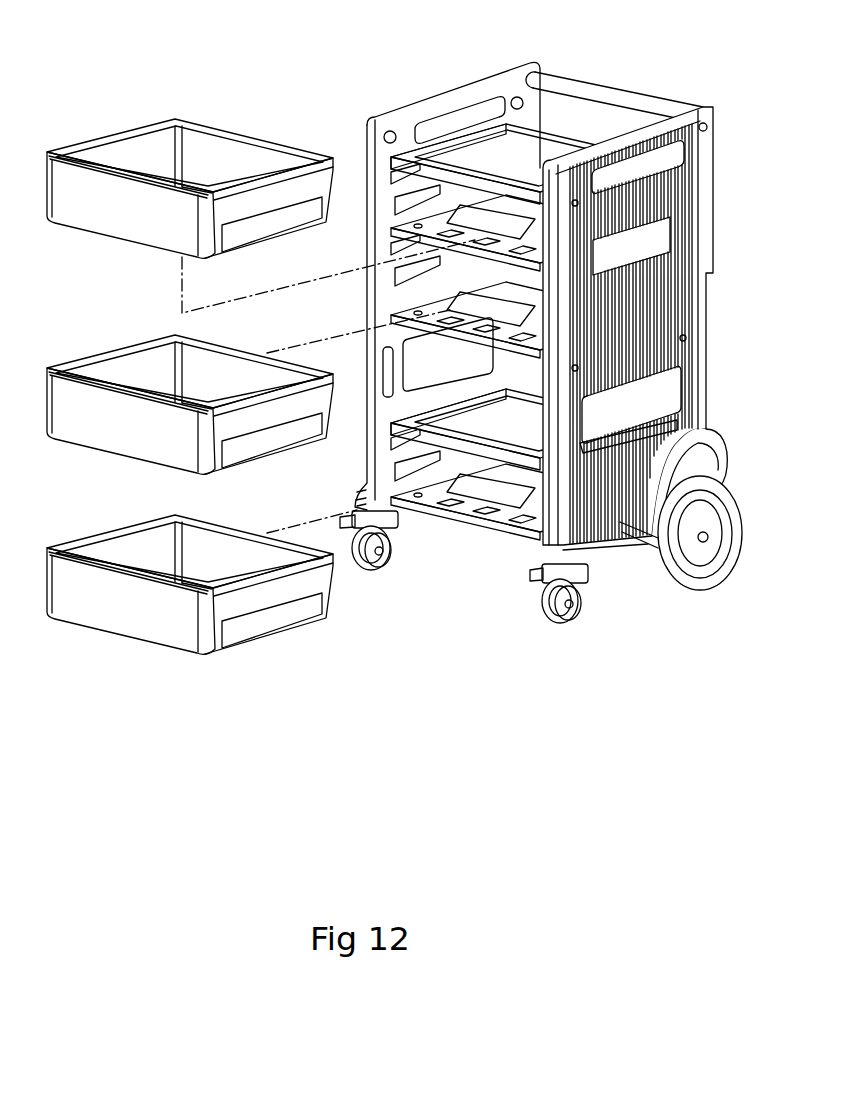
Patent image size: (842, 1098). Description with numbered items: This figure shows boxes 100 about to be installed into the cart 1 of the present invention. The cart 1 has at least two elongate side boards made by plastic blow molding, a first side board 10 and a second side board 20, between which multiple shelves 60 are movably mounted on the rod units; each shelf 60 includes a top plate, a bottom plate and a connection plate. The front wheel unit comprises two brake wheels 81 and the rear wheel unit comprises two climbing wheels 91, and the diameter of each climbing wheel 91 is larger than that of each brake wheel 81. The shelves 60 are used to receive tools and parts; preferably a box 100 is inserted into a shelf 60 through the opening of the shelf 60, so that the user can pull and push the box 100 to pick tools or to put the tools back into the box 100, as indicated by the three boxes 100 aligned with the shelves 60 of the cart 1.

The cart 1 is at (542, 335).
The first side board 10 is at (687, 302).
The second side board 20 is at (432, 107).
The shelf 60 is at (512, 127).
The brake wheel 81 is at (552, 618).
The climbing wheel 91 is at (690, 577).
The box 100 is at (136, 223).